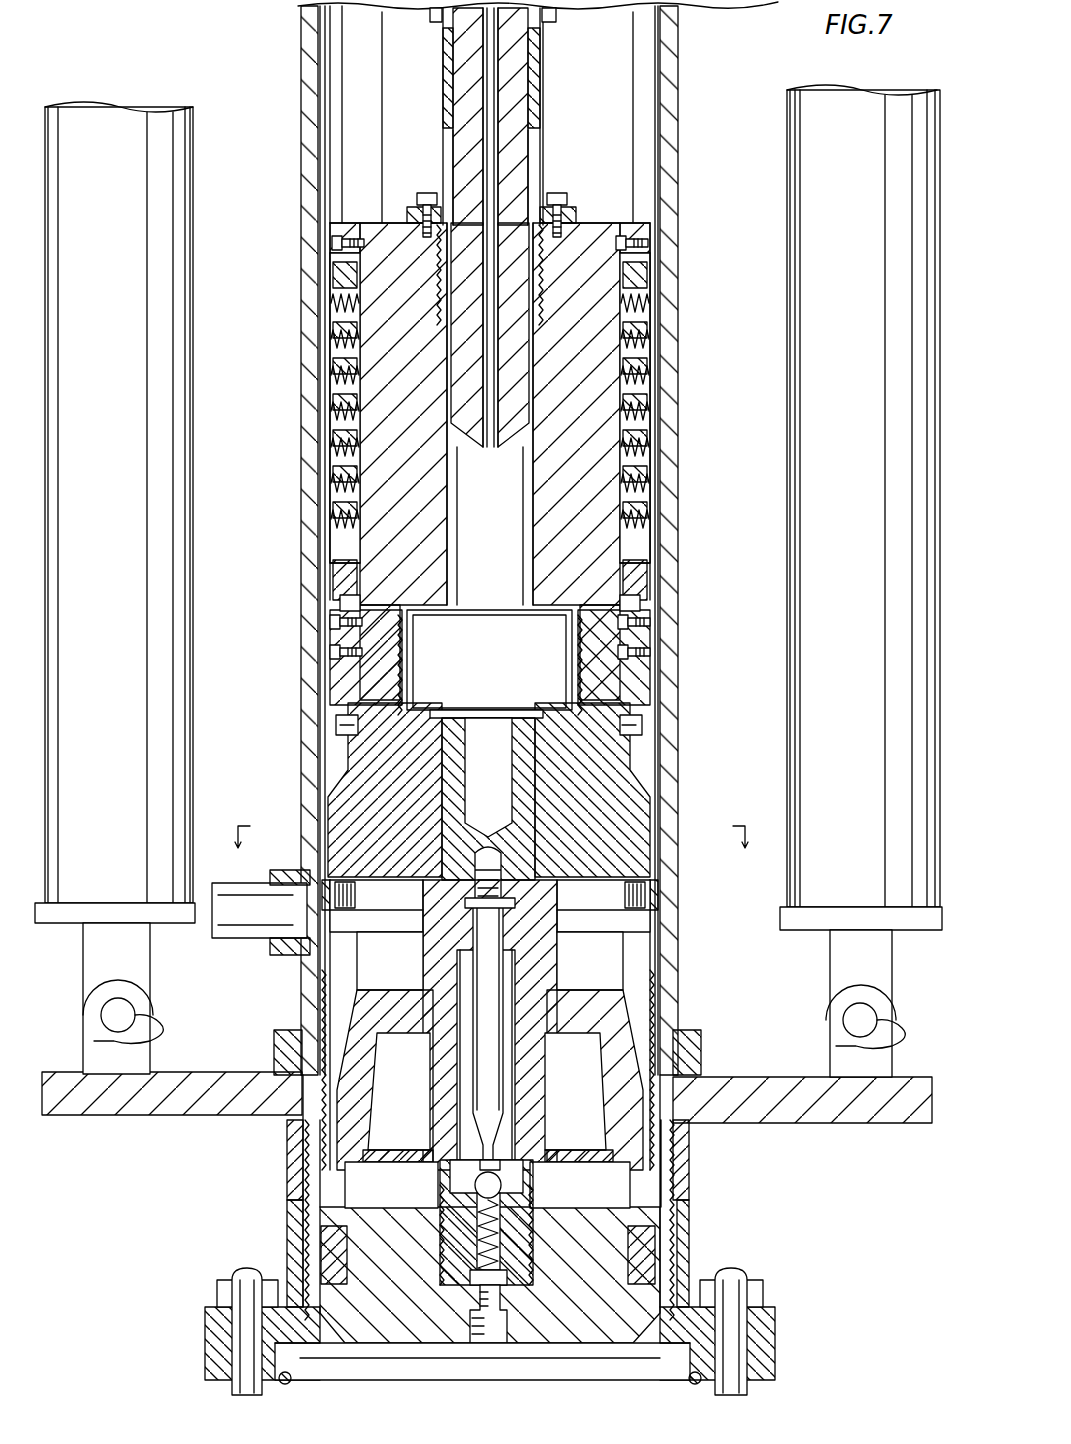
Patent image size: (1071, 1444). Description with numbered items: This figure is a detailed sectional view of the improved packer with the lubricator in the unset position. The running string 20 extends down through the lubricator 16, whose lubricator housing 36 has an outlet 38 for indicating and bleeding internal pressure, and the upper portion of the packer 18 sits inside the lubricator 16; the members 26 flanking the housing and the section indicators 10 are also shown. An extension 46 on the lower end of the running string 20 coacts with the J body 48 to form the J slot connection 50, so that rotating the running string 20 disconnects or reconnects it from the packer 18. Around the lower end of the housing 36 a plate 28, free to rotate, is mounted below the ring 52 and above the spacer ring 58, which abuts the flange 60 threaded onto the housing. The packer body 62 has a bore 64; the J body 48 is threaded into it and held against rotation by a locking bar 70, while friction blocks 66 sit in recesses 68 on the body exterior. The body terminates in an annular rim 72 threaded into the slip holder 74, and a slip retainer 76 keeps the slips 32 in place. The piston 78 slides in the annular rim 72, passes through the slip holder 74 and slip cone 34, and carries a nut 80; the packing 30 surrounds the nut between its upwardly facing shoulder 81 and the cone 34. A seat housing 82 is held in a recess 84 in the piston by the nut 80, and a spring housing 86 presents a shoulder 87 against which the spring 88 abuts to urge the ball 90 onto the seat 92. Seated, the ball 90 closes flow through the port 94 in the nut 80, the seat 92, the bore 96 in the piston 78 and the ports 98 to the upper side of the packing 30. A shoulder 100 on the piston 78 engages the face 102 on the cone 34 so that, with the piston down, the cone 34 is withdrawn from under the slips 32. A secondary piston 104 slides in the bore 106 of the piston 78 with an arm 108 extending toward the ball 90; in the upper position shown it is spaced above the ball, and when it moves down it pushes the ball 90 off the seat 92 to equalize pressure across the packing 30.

The section line 10 is at (496, 851).
The lubricator 16 is at (678, 50).
The packer 18 is at (690, 970).
The running string 20 is at (432, 12).
The hydraulic cylinder 26 is at (130, 403).
The plate 28 is at (900, 1123).
The packing 30 is at (660, 1240).
The slips 32 is at (650, 1008).
The slip cone 34 is at (650, 1110).
The lubricator housing 36 is at (302, 401).
The outlet 38 is at (245, 935).
The extension 46 is at (514, 442).
The J body 48 is at (533, 200).
The J slot connection 50 is at (530, 70).
The ring 52 is at (701, 1048).
The spacer ring 58 is at (690, 1180).
The flange 60 is at (775, 1366).
The packer body 62 is at (600, 345).
The bore 64 is at (533, 525).
The friction blocks 66 is at (650, 405).
The recesses 68 is at (622, 450).
The locking bar 70 is at (576, 218).
The annular rim 72 is at (655, 690).
The slip holder 74 is at (600, 820).
The slip retainer 76 is at (630, 790).
The piston 78 is at (560, 845).
The nut 80 is at (640, 1340).
The upwardly facing shoulder 81 is at (650, 1265).
The seat housing 82 is at (555, 1163).
The recess 84 is at (450, 1185).
The spring housing 86 is at (510, 1235).
The shoulder 87 is at (520, 1270).
The spring 88 is at (480, 1214).
The ball 90 is at (480, 1189).
The seat 92 is at (470, 1168).
The port 94 is at (468, 1320).
The bore 96 is at (441, 967).
The ports 98 is at (531, 972).
The shoulder 100 is at (425, 1000).
The face 102 is at (600, 990).
The secondary piston 104 is at (507, 720).
The bore 106 is at (530, 788).
The arm 108 is at (473, 1060).